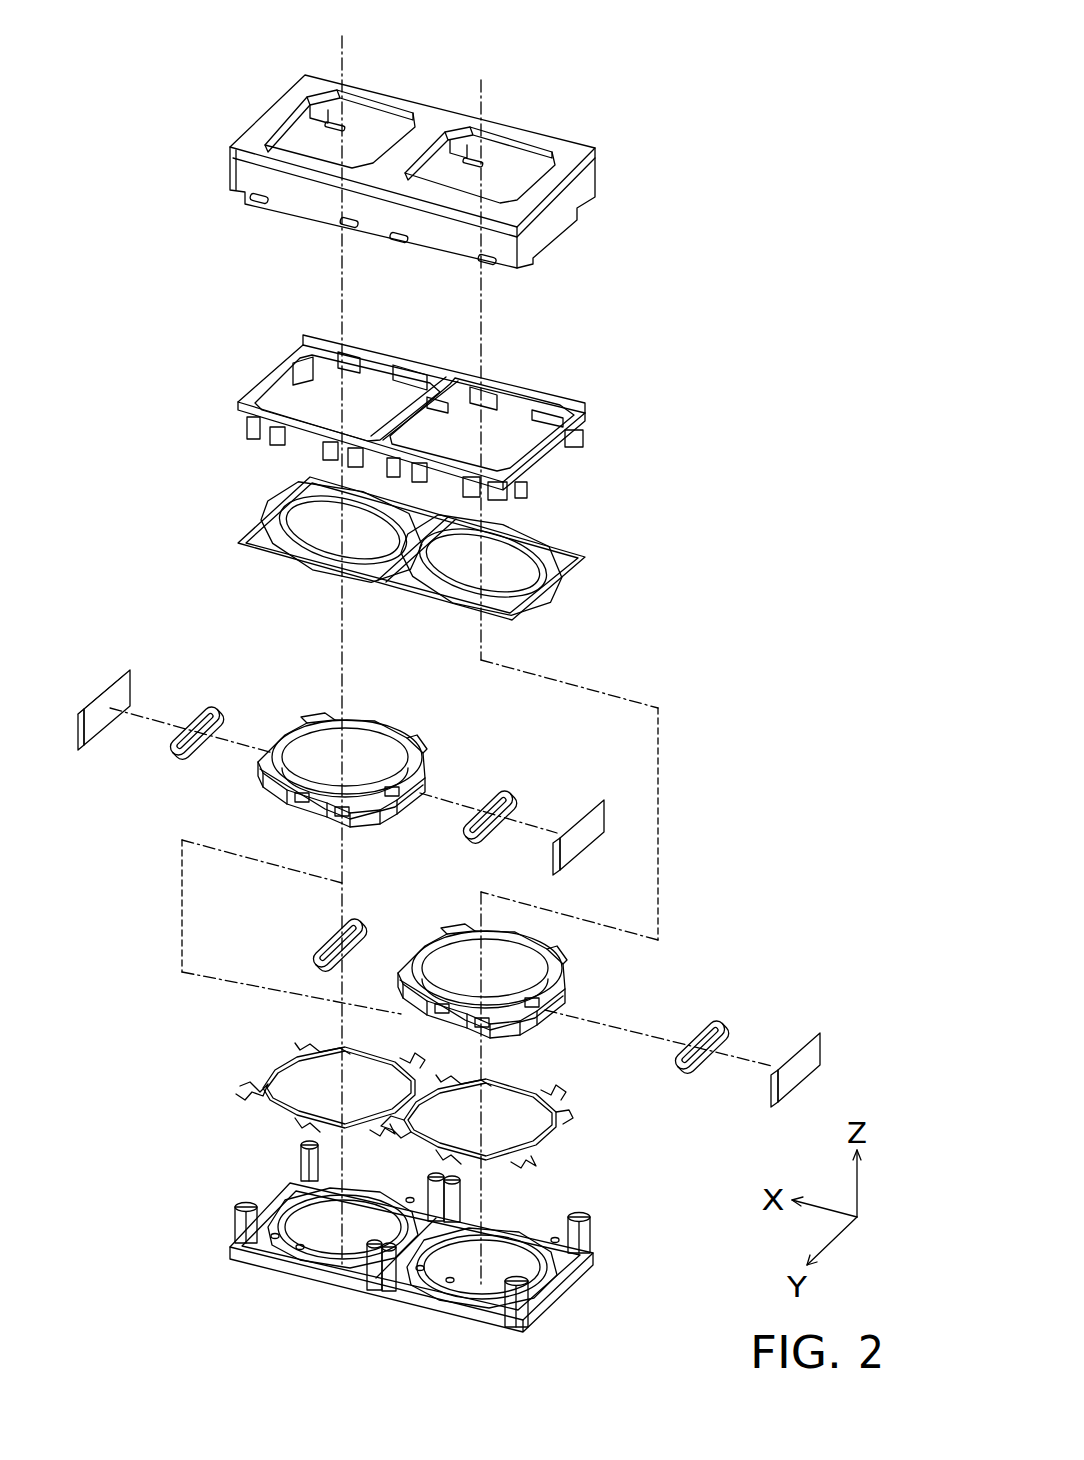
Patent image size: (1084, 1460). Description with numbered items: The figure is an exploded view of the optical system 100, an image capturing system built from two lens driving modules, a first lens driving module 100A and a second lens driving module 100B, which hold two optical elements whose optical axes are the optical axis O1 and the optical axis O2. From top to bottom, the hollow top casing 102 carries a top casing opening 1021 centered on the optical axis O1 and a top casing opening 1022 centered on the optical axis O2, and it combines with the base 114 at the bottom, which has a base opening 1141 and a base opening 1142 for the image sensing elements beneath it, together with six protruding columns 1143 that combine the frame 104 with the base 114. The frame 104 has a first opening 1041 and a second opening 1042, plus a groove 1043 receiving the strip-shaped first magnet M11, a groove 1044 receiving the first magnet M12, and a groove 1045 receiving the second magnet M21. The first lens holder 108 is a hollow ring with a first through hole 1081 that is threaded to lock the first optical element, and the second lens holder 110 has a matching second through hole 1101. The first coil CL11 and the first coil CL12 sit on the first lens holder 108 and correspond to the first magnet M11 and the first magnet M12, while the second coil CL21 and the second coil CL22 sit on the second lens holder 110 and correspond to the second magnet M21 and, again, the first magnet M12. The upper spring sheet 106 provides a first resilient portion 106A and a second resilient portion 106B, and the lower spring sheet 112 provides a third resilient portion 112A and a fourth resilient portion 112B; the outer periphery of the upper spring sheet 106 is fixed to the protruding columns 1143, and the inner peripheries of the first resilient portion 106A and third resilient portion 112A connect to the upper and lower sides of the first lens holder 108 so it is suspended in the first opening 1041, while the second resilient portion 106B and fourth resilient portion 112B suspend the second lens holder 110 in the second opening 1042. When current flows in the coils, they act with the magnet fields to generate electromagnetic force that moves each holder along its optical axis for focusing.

The optical system 100 is at (748, 40).
The first lens driving module 100A is at (828, 583).
The second lens driving module 100B is at (828, 763).
The optical axis O1 is at (342, 634).
The optical axis O2 is at (481, 667).
The top casing 102 is at (550, 223).
The top casing opening 1021 is at (305, 145).
The top casing opening 1022 is at (498, 192).
The frame 104 is at (578, 408).
The first opening 1041 is at (312, 405).
The second opening 1042 is at (510, 437).
The groove 1043 is at (282, 387).
The groove 1044 is at (413, 428).
The groove 1045 is at (553, 465).
The upper spring sheet 106 is at (237, 537).
The first resilient portion 106A is at (275, 510).
The second resilient portion 106B is at (552, 587).
The first lens holder 108 is at (260, 782).
The first through hole 1081 is at (357, 719).
The second lens holder 110 is at (545, 1021).
The second through hole 1101 is at (463, 929).
The lower spring sheet 112 is at (237, 1091).
The third resilient portion 112A is at (279, 1070).
The fourth resilient portion 112B is at (552, 1144).
The base 114 is at (557, 1290).
The base opening 1141 is at (310, 1237).
The base opening 1142 is at (455, 1273).
The protruding columns 1143 is at (303, 1160).
The first magnet M11 is at (117, 675).
The first magnet M12 is at (592, 802).
The second magnet M21 is at (804, 1038).
The first coil CL11 is at (205, 707).
The first coil CL12 is at (493, 790).
The second coil CL21 is at (706, 1019).
The second coil CL22 is at (331, 930).